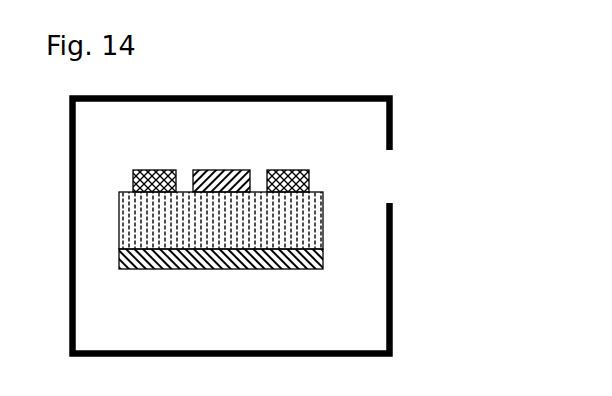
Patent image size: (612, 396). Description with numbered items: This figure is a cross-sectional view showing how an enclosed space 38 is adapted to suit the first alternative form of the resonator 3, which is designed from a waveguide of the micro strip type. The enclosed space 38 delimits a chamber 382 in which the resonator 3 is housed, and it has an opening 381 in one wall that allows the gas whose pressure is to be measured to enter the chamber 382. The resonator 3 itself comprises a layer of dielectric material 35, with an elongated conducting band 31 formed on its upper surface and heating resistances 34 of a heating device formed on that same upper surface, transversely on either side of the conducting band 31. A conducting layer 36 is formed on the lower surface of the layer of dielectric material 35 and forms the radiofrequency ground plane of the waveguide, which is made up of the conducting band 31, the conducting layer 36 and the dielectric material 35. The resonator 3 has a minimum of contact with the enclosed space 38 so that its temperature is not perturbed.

The resonator 3 is at (416, 122).
The elongated conducting band 31 is at (220, 170).
The heating resistances 34 is at (155, 170).
The layer of dielectric material 35 is at (323, 222).
The conducting layer 36 is at (217, 270).
The enclosed space 38 is at (230, 97).
The opening 381 is at (397, 177).
The chamber 382 is at (354, 183).